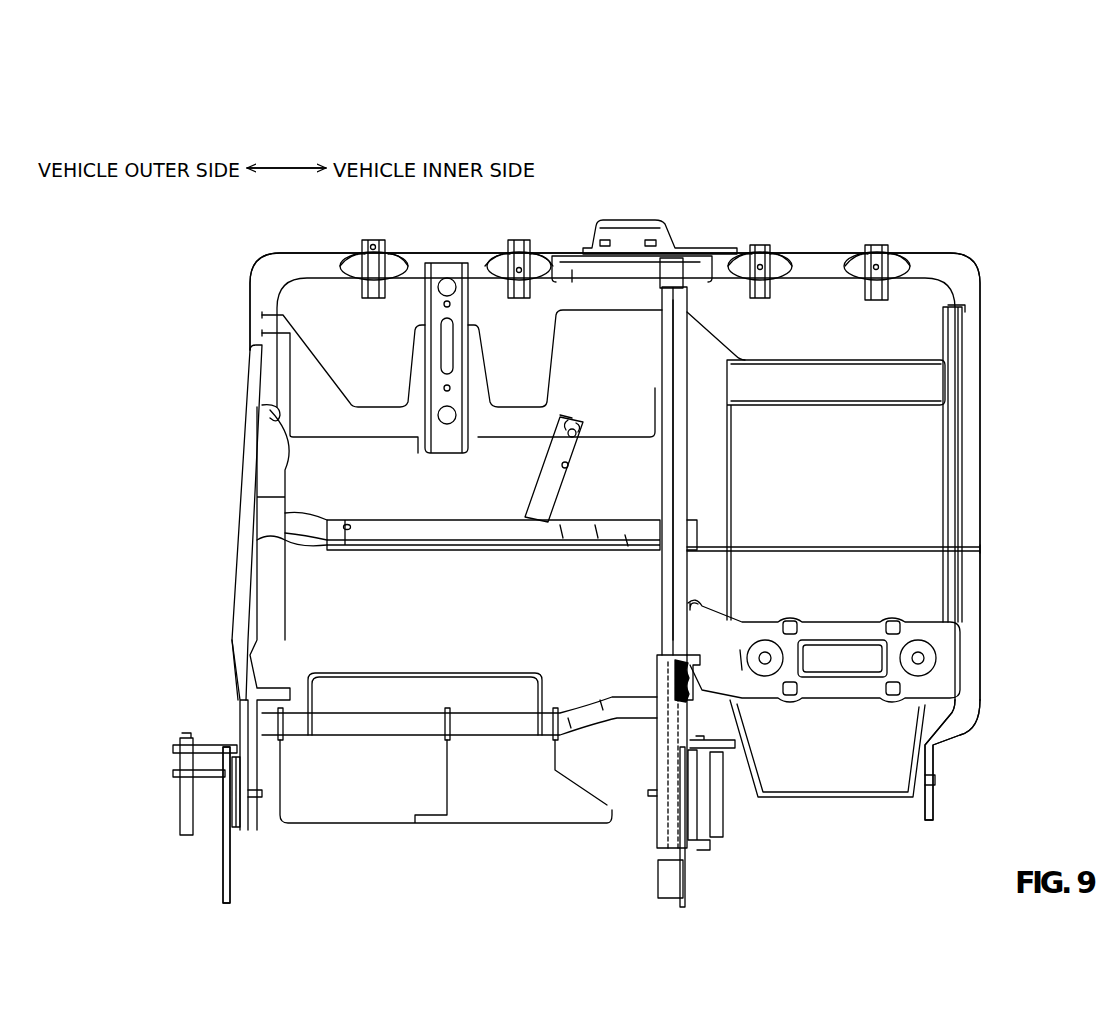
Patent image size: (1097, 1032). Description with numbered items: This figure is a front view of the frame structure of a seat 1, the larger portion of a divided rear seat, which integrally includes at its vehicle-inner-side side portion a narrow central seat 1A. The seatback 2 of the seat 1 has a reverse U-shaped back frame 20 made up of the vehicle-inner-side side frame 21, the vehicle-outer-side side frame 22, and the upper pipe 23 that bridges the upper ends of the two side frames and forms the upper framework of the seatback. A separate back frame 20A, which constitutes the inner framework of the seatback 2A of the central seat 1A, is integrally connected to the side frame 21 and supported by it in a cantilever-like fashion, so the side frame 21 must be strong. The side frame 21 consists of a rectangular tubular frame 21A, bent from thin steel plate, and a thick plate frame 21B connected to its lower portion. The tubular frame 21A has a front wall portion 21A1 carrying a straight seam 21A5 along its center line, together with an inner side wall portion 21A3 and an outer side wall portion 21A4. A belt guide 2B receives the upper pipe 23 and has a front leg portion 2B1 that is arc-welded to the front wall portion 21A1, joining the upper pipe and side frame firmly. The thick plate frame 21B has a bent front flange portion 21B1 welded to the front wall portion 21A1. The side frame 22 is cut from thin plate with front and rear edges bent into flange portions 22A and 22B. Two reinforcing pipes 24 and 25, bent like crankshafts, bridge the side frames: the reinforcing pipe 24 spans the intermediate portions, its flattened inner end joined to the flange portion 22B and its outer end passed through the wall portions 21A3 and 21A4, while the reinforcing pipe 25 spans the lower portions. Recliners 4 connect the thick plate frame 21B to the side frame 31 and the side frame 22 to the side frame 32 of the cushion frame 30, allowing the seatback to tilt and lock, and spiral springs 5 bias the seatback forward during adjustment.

The seat 1 is at (200, 302).
The central seat 1A is at (1020, 302).
The seatback 2 is at (615, 476).
The seatback of central seat 2A is at (952, 760).
The belt guide 2B is at (630, 246).
The front leg portion 2B1 is at (680, 268).
The back frame 20 is at (253, 275).
The back frame of central seat 20A is at (978, 272).
The side frame 21 is at (780, 471).
The rectangular tubular frame 21A is at (660, 343).
The front wall portion 21A1 is at (680, 456).
The inner side wall portion 21A3 is at (658, 378).
The outer side wall portion 21A4 is at (680, 388).
The seam 21A5 is at (672, 424).
The thick plate frame 21B is at (655, 832).
The front flange portion 21B1 is at (657, 680).
The side frame 22 is at (253, 587).
The flange portion 22A is at (252, 472).
The flange portion 22B is at (278, 513).
The upper pipe 23 is at (455, 262).
The reinforcing pipe 24 is at (405, 527).
The reinforcing pipe 25 is at (382, 722).
The cushion frame 30 is at (226, 825).
The side frame 31 is at (688, 882).
The side frame 32 is at (232, 872).
The recliner 4 is at (248, 790).
The spiral spring 5 is at (180, 765).